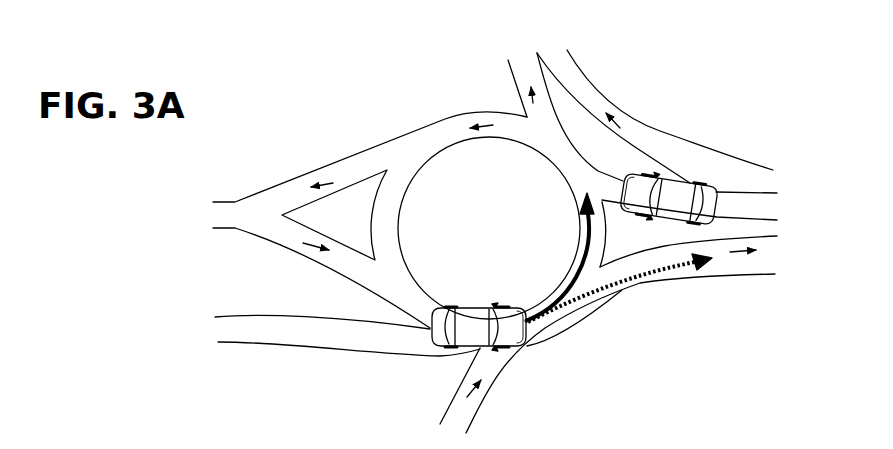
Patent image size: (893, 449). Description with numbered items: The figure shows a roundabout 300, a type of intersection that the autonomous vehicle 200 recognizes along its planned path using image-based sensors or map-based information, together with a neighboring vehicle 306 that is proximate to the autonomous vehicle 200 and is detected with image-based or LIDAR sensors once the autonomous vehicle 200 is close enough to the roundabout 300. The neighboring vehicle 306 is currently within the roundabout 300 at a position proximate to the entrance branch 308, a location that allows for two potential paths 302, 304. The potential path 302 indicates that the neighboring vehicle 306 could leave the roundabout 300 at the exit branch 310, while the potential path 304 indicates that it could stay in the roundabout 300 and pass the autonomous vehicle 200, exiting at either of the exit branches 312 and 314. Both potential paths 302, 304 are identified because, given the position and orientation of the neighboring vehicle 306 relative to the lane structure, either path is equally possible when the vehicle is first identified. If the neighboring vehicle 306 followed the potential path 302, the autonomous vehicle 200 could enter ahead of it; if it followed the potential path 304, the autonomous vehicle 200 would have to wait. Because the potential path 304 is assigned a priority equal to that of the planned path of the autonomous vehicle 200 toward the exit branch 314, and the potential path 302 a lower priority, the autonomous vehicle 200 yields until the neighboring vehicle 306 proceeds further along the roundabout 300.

The autonomous vehicle 200 is at (672, 193).
The roundabout 300 is at (510, 226).
The potential path 302 is at (633, 276).
The potential path 304 is at (580, 258).
The neighboring vehicle 306 is at (514, 333).
The entrance branch 308 is at (486, 397).
The exit branch 310 is at (732, 275).
The exit branch 312 is at (518, 91).
The exit branch 314 is at (290, 183).